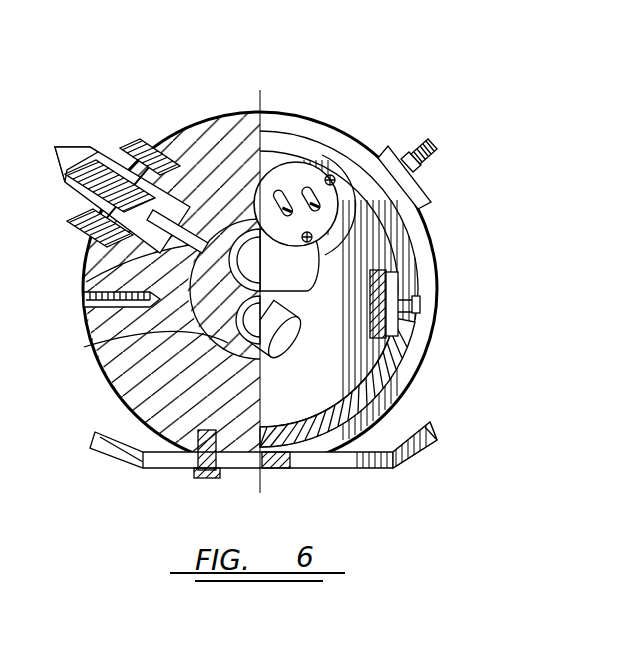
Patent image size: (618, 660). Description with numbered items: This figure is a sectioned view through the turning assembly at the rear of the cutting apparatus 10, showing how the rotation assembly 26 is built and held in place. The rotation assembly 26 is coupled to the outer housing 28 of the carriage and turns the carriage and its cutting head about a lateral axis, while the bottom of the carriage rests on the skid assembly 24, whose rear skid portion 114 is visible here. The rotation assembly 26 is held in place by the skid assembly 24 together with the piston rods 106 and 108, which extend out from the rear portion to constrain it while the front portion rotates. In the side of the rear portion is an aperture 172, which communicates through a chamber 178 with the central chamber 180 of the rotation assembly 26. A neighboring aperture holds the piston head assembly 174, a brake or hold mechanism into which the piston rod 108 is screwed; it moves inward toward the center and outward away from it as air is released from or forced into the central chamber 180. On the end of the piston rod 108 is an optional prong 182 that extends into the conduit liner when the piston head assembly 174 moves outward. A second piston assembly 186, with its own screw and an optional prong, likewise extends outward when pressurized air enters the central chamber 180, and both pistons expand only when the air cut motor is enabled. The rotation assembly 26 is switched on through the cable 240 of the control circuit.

The cutting apparatus 10 is at (336, 94).
The skid assembly 24 is at (302, 471).
The rotation assembly 26 is at (228, 108).
The outer housing 28 is at (392, 308).
The piston rod 106 is at (430, 141).
The piston rod 108 is at (62, 172).
The rear skid portion 114 is at (430, 447).
The aperture 172 is at (181, 158).
The piston head assembly 174 is at (128, 161).
The chamber 178 is at (88, 281).
The central chamber 180 is at (103, 346).
The prong 182 is at (73, 145).
The piston assembly 186 is at (443, 197).
The cable 240 is at (300, 263).